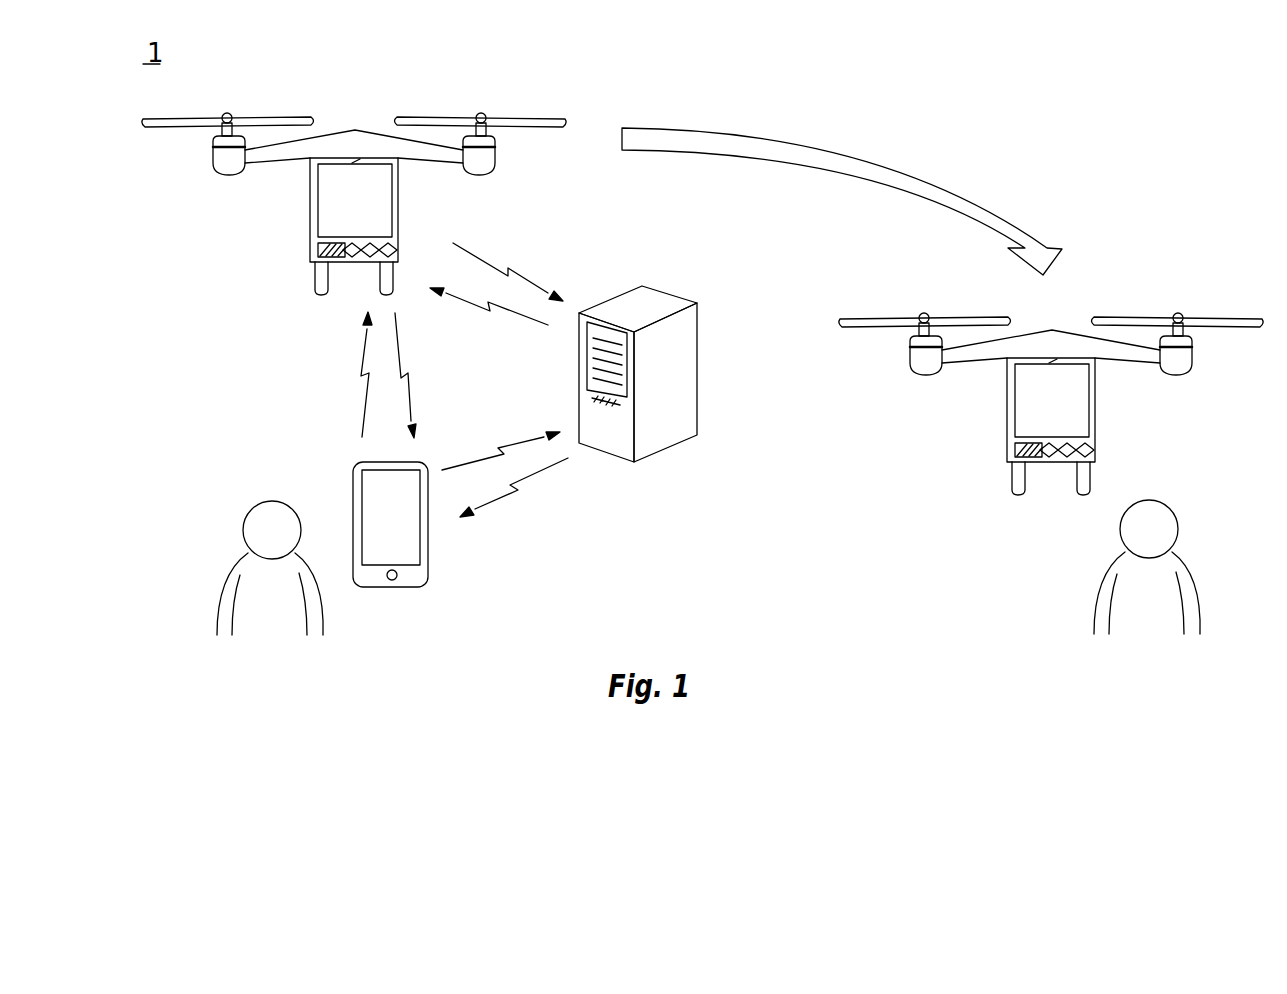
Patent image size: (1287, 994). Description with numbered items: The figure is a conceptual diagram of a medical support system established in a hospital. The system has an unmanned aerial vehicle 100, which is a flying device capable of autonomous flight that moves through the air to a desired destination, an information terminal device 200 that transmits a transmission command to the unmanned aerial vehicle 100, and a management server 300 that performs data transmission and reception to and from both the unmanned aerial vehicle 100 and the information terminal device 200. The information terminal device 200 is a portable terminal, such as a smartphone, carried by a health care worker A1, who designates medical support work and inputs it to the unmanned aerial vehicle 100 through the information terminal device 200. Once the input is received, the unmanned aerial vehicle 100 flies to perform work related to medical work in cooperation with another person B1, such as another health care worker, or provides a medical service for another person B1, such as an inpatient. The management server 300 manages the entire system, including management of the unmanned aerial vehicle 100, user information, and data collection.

The unmanned aerial vehicle 100 is at (302, 248).
The information terminal device 200 is at (437, 563).
The management server 300 is at (673, 450).
The health care worker A1 is at (297, 623).
The another person B1 is at (1170, 623).